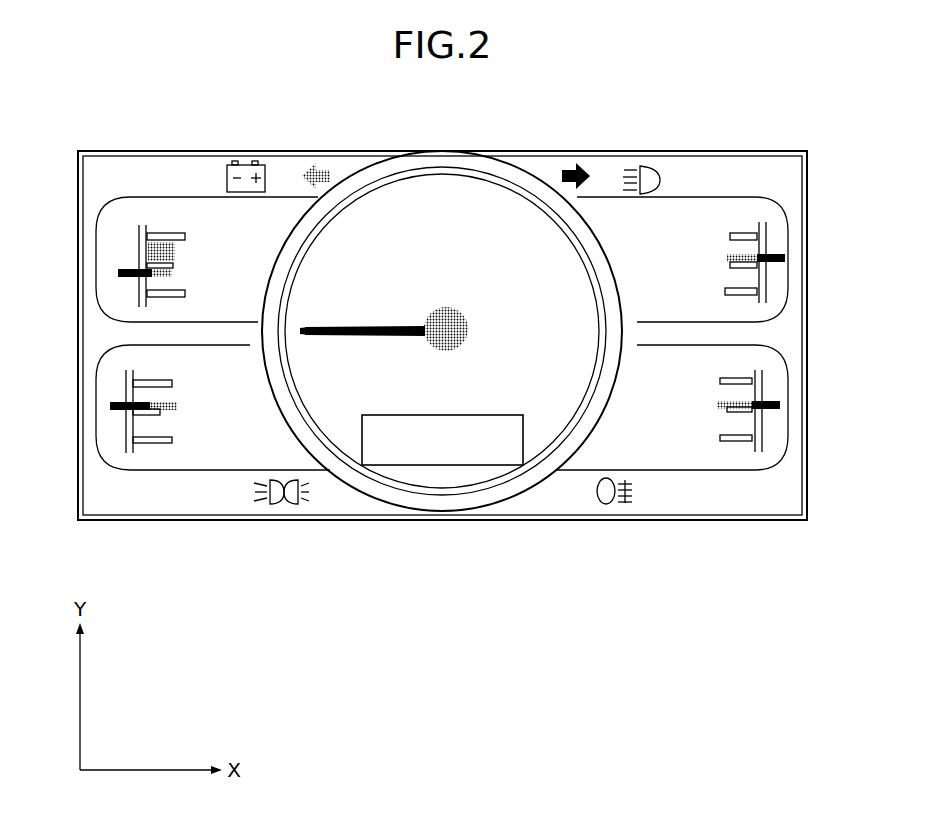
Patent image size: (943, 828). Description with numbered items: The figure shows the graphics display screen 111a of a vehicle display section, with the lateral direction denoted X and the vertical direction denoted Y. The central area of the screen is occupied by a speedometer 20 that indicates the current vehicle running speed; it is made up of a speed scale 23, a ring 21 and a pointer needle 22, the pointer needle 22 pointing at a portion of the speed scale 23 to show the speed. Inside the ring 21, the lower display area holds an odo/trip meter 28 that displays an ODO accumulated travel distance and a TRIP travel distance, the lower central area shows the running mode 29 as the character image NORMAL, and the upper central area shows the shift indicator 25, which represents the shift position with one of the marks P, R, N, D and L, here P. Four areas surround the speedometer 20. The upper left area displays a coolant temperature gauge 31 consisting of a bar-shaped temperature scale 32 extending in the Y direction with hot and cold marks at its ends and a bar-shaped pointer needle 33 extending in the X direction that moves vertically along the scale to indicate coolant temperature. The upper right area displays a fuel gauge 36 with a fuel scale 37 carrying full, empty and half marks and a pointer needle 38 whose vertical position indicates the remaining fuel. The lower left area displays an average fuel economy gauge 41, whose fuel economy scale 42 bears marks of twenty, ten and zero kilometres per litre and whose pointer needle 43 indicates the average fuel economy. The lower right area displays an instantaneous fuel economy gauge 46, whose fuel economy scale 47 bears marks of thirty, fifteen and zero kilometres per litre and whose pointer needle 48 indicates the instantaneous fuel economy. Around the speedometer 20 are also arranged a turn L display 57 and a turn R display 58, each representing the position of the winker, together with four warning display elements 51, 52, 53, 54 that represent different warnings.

The graphics display screen 111a is at (762, 152).
The speedometer 20 is at (392, 200).
The ring 21 is at (375, 175).
The pointer needle 22 is at (395, 325).
The speed scale 23 is at (300, 337).
The shift indicator 25 is at (476, 265).
The odo/trip meter 28 is at (411, 460).
The running mode 29 is at (490, 384).
The coolant temperature gauge 31 is at (165, 205).
The temperature scale 32 is at (142, 233).
The pointer needle 33 is at (130, 272).
The fuel gauge 36 is at (742, 205).
The fuel scale 37 is at (768, 224).
The pointer needle 38 is at (773, 262).
The average fuel economy gauge 41 is at (190, 465).
The fuel economy scale 42 is at (125, 438).
The pointer needle 43 is at (125, 405).
The instantaneous fuel economy gauge 46 is at (720, 463).
The fuel economy scale 47 is at (762, 427).
The pointer needle 48 is at (765, 403).
The warning display element 51 is at (247, 163).
The warning display element 52 is at (656, 165).
The warning display element 53 is at (274, 508).
The warning display element 54 is at (616, 505).
The turn L display 57 is at (318, 163).
The turn R display 58 is at (571, 163).